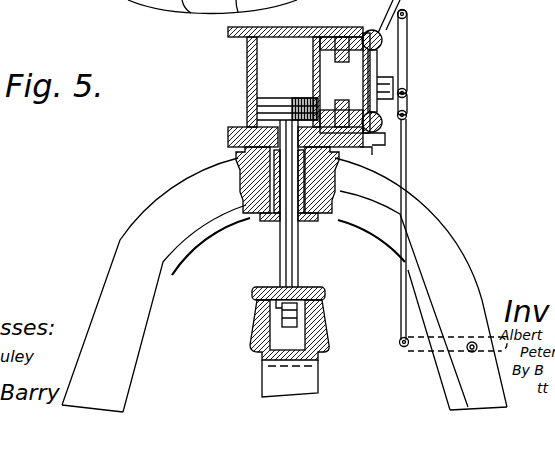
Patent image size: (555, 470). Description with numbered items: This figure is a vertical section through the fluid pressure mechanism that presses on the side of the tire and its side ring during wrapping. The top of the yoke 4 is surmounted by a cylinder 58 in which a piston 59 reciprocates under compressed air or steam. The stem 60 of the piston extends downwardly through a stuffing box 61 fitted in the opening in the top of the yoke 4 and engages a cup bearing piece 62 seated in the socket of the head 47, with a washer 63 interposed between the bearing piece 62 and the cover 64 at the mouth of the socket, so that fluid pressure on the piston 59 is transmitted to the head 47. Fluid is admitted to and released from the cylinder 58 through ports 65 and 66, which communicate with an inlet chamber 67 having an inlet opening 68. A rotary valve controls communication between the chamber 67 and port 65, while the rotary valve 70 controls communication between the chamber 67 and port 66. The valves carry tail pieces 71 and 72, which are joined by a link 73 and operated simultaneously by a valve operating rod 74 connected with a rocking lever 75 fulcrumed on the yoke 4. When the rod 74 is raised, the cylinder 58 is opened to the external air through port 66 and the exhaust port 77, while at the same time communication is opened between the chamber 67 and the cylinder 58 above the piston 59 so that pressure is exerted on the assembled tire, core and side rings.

The yoke 4 is at (284, 285).
The head 47 is at (308, 310).
The cylinder 58 is at (246, 73).
The piston 59 is at (284, 118).
The stem 60 is at (283, 237).
The stuffing box 61 is at (310, 183).
The cup bearing piece 62 is at (280, 330).
The washer 63 is at (272, 303).
The cover 64 is at (307, 288).
The port 65 is at (343, 55).
The port 66 is at (336, 118).
The inlet chamber 67 is at (374, 72).
The inlet opening 68 is at (385, 88).
The rotary valve 70 is at (382, 126).
The tail piece 71 is at (407, 15).
The tail piece 72 is at (395, 104).
The link 73 is at (408, 38).
The valve operating rod 74 is at (405, 178).
The rocking lever 75 is at (410, 344).
The exhaust port 77 is at (365, 150).